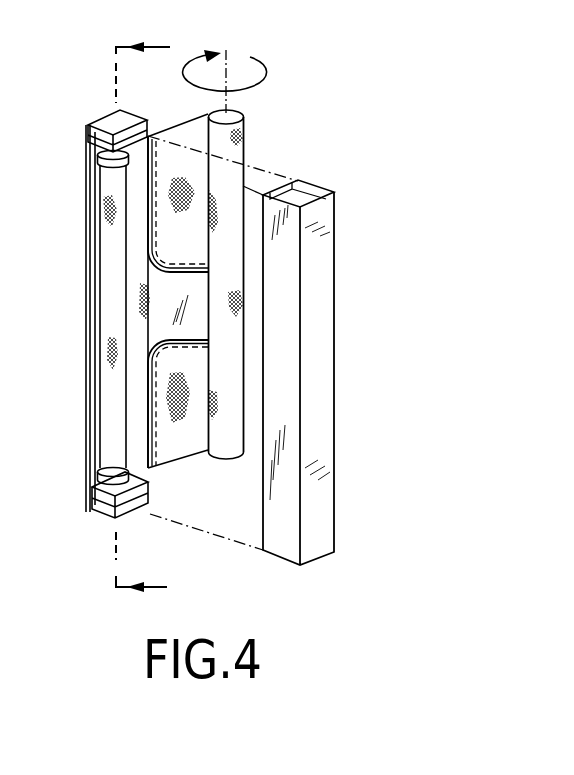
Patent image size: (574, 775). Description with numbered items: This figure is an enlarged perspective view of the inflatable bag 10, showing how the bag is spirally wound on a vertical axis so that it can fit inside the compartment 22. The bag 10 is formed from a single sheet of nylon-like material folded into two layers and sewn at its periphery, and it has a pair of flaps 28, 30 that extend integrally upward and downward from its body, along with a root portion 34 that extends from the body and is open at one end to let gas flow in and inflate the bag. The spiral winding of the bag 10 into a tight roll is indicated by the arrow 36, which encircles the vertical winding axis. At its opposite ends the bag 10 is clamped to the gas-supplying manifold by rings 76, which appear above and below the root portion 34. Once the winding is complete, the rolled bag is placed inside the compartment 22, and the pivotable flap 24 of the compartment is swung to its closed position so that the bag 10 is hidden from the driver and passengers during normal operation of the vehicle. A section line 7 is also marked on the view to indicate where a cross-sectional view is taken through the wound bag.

The section line 7- 7 is at (128, 318).
The inflatable bag 10 is at (276, 137).
The compartment 22 is at (72, 237).
The flap 24 is at (323, 478).
The flap 28 is at (158, 245).
The flap 30 is at (152, 397).
The root portion 34 is at (108, 322).
The arrow 36 is at (250, 62).
The rings 76 is at (118, 161).